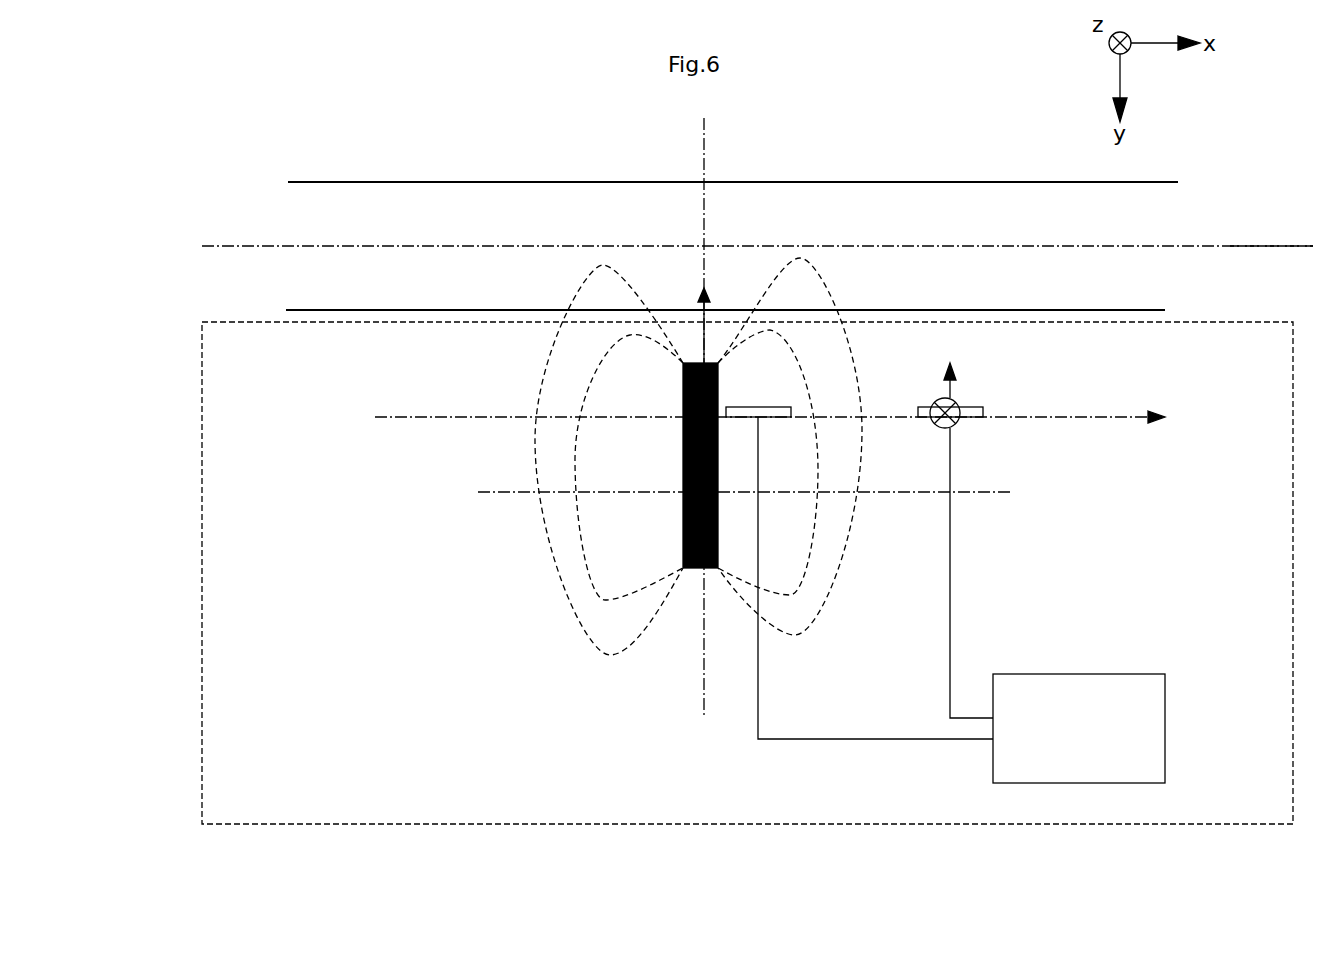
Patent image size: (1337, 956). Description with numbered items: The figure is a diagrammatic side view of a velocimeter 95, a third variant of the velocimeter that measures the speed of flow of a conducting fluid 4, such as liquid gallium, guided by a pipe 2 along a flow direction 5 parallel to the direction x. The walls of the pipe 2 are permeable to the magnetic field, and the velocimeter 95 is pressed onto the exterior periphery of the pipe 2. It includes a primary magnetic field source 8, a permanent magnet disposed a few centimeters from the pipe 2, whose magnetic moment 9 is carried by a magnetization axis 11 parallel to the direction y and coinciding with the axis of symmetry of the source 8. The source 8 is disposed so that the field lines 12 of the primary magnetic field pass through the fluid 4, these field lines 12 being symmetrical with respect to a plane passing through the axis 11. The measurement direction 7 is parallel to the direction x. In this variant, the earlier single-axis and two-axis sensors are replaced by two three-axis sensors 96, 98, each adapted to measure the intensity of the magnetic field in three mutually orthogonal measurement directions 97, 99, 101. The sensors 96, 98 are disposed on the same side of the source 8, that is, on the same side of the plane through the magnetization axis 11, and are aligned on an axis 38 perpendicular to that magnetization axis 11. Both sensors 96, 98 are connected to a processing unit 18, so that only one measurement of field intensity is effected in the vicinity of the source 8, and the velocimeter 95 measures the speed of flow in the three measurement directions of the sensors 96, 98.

The pipe 2 is at (523, 182).
The conducting fluid 4 is at (410, 207).
The flow direction 5 is at (250, 246).
The measurement direction 7 is at (1003, 246).
The primary magnetic field source 8 is at (683, 406).
The magnetic moment 9 is at (704, 326).
The magnetization axis 11 is at (705, 143).
The field lines 12 is at (581, 558).
The processing unit 18 is at (1079, 728).
The axis 38 is at (508, 492).
The velocimeter 95 is at (198, 312).
The three-axis sensor 96 is at (767, 418).
The measurement direction 97 is at (938, 427).
The three-axis sensor 98 is at (985, 412).
The measurement direction 99 is at (962, 388).
The measurement direction 101 is at (1050, 417).